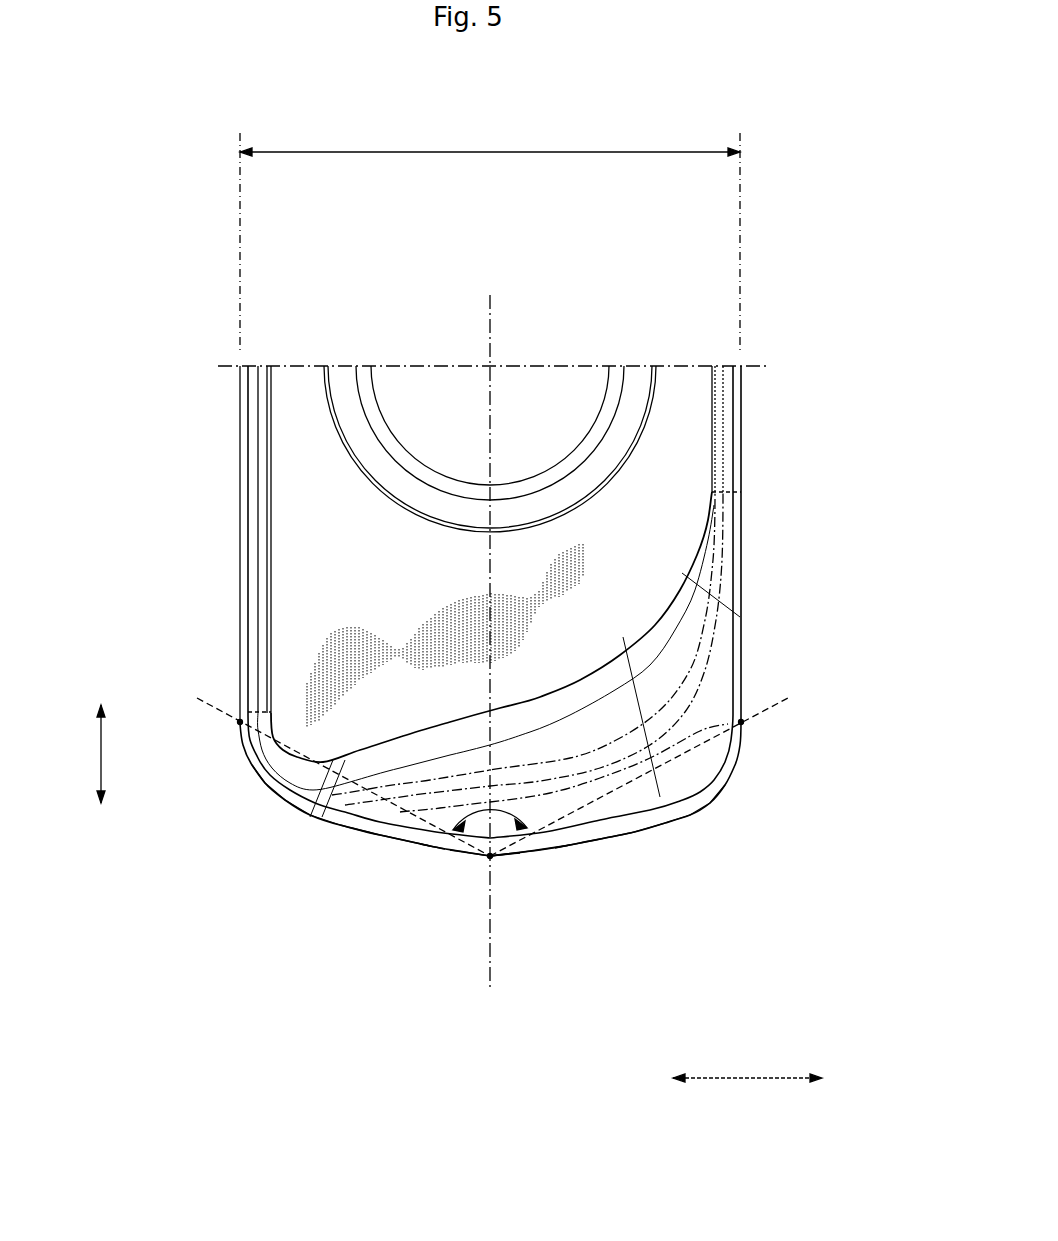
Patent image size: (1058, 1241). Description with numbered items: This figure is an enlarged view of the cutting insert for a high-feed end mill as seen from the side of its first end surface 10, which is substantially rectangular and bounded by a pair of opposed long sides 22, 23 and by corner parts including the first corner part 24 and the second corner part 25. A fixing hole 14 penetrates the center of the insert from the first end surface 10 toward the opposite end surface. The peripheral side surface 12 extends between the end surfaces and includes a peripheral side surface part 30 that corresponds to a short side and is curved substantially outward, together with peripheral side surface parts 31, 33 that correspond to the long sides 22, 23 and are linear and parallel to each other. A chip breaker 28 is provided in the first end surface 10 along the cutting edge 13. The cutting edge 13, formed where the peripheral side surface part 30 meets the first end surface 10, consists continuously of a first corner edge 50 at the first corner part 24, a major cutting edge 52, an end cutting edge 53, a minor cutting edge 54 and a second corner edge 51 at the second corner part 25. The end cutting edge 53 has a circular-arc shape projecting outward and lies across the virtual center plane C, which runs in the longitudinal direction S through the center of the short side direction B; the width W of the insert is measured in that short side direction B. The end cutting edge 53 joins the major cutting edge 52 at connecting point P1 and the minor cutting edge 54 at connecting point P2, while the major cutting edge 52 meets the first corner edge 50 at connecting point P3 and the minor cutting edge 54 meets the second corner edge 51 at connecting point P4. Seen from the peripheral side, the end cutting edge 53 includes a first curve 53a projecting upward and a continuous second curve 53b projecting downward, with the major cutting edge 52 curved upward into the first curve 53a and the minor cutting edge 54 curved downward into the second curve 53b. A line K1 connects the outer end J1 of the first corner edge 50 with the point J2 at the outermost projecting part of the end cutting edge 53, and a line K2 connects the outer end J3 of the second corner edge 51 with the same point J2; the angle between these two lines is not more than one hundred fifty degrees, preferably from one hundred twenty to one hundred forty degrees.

The first end surface 10 is at (744, 450).
The peripheral side surface 12 is at (744, 680).
The cutting edge 13 is at (607, 839).
The fixing hole 14 is at (538, 397).
The long side 22 is at (743, 548).
The long side 23 is at (238, 488).
The first corner part 24 is at (733, 770).
The second corner part 25 is at (247, 767).
The chip breaker 28 is at (700, 731).
The peripheral side surface part 30 is at (550, 852).
The peripheral side surface part 31 is at (238, 650).
The peripheral side surface part 33 is at (743, 637).
The first corner edge 50 is at (708, 790).
The second corner edge 51 is at (273, 800).
The major cutting edge 52 is at (645, 827).
The end cutting edge 53 is at (475, 858).
The first curve 53a is at (508, 858).
The second curve 53b is at (433, 860).
The minor cutting edge 54 is at (363, 833).
The connecting point P1 is at (568, 847).
The connecting point P2 is at (413, 847).
The connecting point P3 is at (668, 822).
The connecting point P4 is at (318, 817).
The outer end of first corner edge J1 is at (742, 722).
The outermost projecting point of end cutting edge J2 is at (493, 862).
The outer end of second corner edge J3 is at (240, 722).
The line K1 is at (800, 702).
The line K2 is at (200, 702).
The virtual center plane C is at (498, 661).
The width of cutting insert W is at (490, 236).
The longitudinal direction S is at (90, 754).
The short side direction B is at (747, 1060).